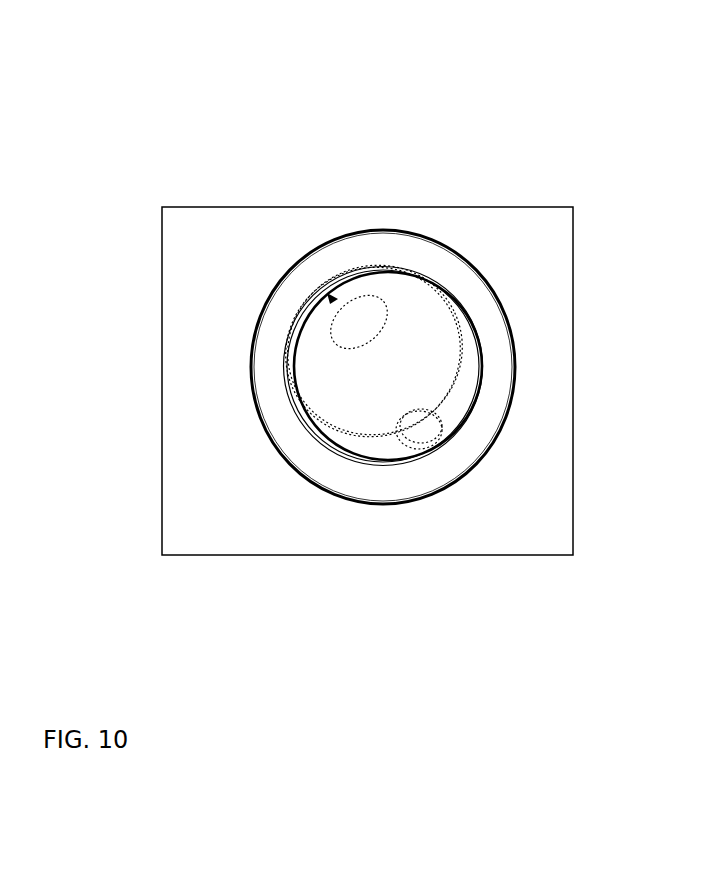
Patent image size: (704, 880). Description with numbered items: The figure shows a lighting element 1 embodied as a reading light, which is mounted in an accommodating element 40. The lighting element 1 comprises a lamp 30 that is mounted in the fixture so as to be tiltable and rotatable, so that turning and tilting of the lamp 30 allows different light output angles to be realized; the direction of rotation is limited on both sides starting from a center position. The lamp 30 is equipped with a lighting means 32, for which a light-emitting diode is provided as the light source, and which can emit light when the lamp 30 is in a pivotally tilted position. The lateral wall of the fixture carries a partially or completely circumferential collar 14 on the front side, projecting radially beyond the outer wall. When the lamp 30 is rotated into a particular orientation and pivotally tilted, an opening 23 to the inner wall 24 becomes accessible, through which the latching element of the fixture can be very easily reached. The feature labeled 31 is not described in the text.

The lighting element 1 is at (345, 237).
The collar 14 is at (402, 473).
The opening 23 is at (336, 290).
The inner wall 24 is at (307, 327).
The lamp 30 is at (393, 362).
The first aperture 31 is at (363, 323).
The lighting means 32 is at (423, 428).
The accommodating element 40 is at (237, 240).